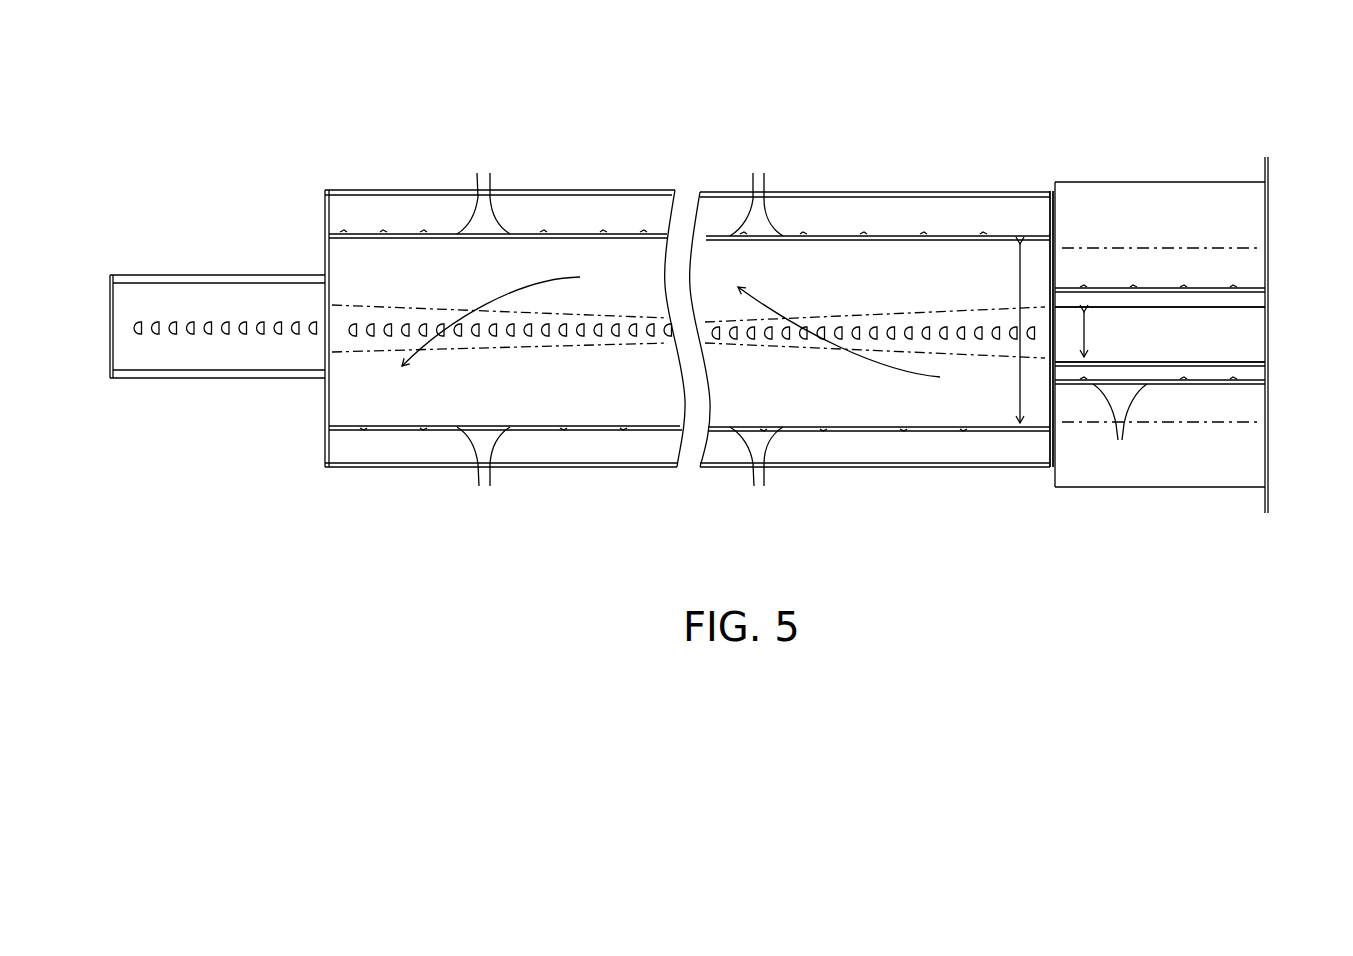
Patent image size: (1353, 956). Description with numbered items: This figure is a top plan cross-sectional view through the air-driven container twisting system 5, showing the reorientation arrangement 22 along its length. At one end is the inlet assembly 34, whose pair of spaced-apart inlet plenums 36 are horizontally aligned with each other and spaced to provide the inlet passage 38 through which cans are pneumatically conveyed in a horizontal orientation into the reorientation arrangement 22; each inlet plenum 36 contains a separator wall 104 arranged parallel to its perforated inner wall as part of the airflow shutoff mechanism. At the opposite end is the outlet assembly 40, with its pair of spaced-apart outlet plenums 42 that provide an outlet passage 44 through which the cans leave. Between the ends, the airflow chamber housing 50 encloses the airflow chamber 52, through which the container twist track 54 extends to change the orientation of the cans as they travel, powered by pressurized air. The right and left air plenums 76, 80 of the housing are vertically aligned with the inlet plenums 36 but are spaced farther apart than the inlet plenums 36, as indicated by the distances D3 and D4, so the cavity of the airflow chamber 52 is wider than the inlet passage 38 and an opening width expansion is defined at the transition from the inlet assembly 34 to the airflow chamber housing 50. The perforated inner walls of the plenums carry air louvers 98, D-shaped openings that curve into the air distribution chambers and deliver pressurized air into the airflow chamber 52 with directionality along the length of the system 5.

The air-driven container twisting system 5 is at (527, 84).
The reorientation arrangement 22 is at (522, 265).
The inlet assembly 34 is at (1141, 113).
The inlet plenums 36 is at (1178, 168).
The inlet passage 38 is at (1260, 325).
The outlet assembly 40 is at (200, 248).
The outlet plenums 42 is at (155, 270).
The inlet pipe passage 44 is at (131, 302).
The airflow chamber housing 50 is at (834, 193).
The airflow chamber 52 is at (999, 267).
The container twist track 54 is at (816, 304).
The right air plenum 76 is at (903, 193).
The left air plenum 80 is at (866, 469).
The air louvers 98 is at (222, 338).
The separator wall 104 is at (1226, 248).
The distance between air plenums D3 is at (1019, 376).
The distance between inlet plenums D4 is at (1086, 334).